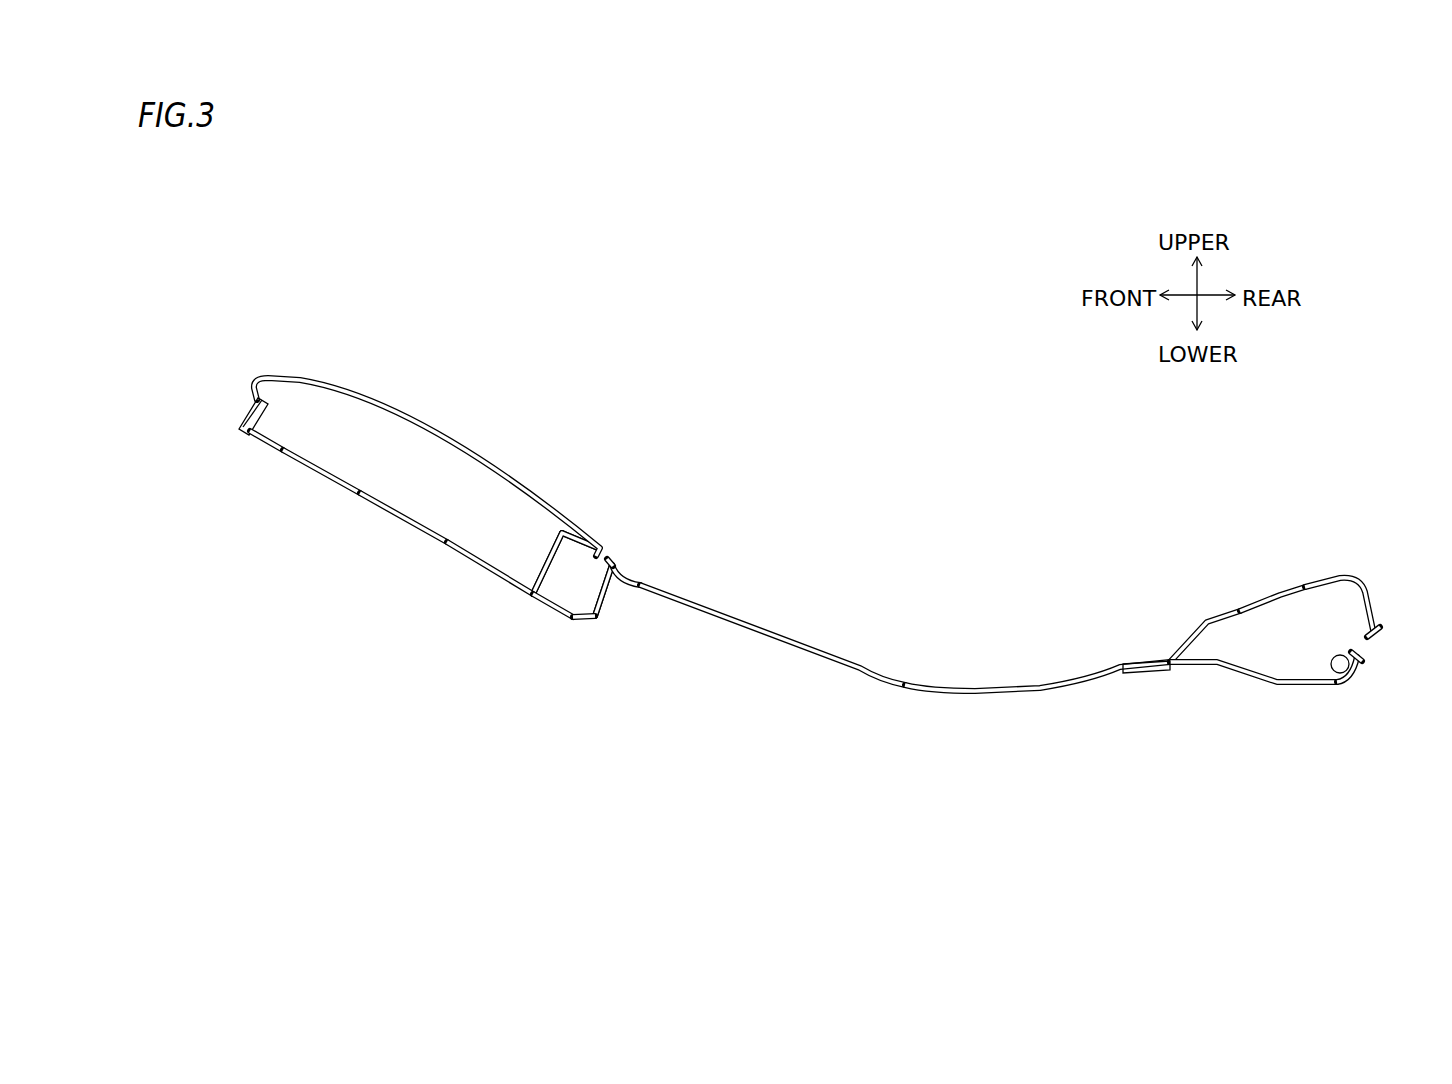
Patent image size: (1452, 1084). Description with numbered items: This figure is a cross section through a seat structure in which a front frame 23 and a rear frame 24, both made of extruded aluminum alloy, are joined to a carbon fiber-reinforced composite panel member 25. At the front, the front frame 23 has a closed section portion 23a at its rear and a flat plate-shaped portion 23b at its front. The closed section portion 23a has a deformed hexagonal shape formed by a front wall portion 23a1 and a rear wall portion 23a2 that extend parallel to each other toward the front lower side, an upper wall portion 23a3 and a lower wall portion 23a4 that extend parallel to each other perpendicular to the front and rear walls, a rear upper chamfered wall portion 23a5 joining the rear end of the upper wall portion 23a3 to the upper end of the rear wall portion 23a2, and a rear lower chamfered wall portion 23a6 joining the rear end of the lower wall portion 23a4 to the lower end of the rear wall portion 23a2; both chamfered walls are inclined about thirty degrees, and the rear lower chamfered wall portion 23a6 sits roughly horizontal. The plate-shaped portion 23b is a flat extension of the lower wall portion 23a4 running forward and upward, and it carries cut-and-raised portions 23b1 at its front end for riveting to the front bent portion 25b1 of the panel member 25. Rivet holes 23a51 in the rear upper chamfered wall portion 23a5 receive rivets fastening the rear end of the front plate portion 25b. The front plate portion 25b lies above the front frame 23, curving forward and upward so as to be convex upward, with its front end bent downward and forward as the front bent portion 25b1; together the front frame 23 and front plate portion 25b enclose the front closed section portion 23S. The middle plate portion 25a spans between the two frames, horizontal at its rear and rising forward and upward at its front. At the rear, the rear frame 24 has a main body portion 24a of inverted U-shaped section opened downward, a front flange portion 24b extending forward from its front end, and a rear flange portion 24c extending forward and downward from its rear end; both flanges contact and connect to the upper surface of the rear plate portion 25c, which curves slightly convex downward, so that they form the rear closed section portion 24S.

The front frame 23 is at (381, 516).
The front closed section portion 23S is at (322, 478).
The closed section portion 23a is at (580, 620).
The front wall portion 23a1 is at (547, 558).
The rear wall portion 23a2 is at (608, 594).
The upper wall portion 23a3 is at (577, 527).
The lower wall portion 23a4 is at (548, 606).
The rear upper chamfered wall portion 23a5 is at (618, 567).
The rivet holes 23a51 is at (613, 560).
The rear lower chamfered wall portion 23a6 is at (593, 622).
The plate-shaped portion 23b is at (433, 545).
The cut-and-raised portions 23b1 is at (262, 408).
The rear frame 24 is at (1260, 596).
The rear closed section portion 24S is at (1225, 610).
The main body portion 24a is at (1295, 583).
The front flange portion 24b is at (1143, 660).
The rear flange portion 24c is at (1350, 677).
The panel member 25 is at (877, 678).
The middle plate portion 25a is at (947, 692).
The front plate portion 25b is at (426, 428).
The front bent portion 25b1 is at (250, 410).
The rear plate portion 25c is at (1300, 686).